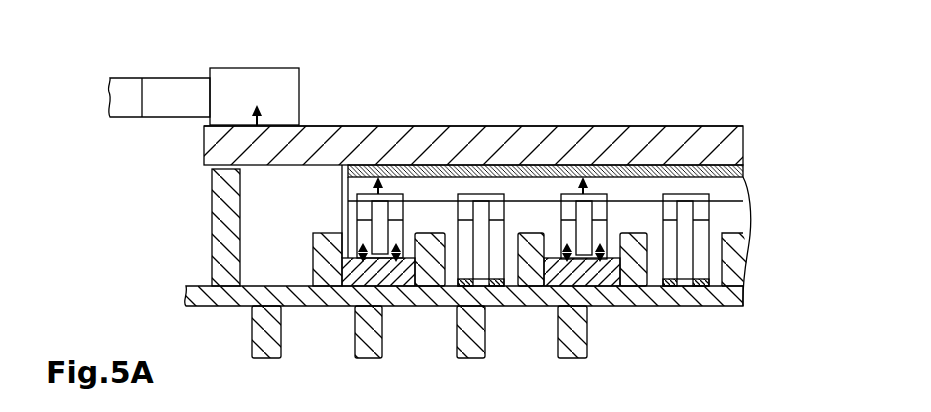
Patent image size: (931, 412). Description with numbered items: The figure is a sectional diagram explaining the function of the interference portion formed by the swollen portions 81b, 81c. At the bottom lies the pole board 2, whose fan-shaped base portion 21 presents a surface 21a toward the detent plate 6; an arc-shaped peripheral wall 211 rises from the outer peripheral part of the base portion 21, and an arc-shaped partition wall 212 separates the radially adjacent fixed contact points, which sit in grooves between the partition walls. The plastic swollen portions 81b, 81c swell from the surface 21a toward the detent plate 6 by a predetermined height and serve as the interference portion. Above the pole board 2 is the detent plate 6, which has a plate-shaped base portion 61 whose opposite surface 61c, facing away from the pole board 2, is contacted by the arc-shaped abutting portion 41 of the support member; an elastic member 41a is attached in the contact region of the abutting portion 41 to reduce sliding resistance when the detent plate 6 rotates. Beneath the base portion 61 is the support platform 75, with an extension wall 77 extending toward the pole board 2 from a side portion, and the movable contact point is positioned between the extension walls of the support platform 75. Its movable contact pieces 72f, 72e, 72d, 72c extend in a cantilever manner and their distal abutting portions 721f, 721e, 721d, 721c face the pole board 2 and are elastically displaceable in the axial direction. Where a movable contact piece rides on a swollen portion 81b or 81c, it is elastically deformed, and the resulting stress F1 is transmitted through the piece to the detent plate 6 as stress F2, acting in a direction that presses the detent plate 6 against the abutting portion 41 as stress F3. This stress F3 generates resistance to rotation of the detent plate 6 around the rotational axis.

The pole board 2 is at (466, 279).
The base portion 21 is at (185, 296).
The surface of the base portion 21a is at (269, 285).
The peripheral wall 211 is at (222, 207).
The partition wall 212 is at (328, 262).
The detent plate 6 is at (504, 164).
The plate-shaped base portion 61 is at (656, 125).
The opposite surface 61c is at (334, 125).
The support platform 75 is at (440, 170).
The extension wall 77 is at (738, 191).
The movable contact piece 72f is at (397, 193).
The movable contact piece 72e is at (500, 193).
The movable contact piece 72d is at (600, 193).
The movable contact piece 72c is at (706, 193).
The swollen portion 81c is at (410, 258).
The swollen portion 81b is at (612, 258).
The abutting portion 721f is at (420, 306).
The abutting portion 721e is at (513, 306).
The abutting portion 721d is at (579, 306).
The abutting portion 721c is at (717, 306).
The abutting portion 41 is at (175, 88).
The elastic member 41a is at (252, 83).
The stress F1 is at (358, 248).
The stress F2 is at (372, 190).
The stress F3 is at (263, 119).